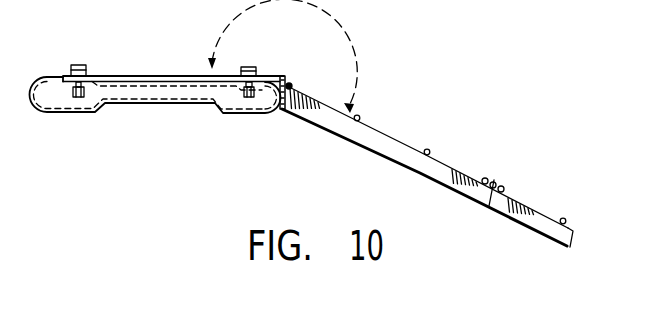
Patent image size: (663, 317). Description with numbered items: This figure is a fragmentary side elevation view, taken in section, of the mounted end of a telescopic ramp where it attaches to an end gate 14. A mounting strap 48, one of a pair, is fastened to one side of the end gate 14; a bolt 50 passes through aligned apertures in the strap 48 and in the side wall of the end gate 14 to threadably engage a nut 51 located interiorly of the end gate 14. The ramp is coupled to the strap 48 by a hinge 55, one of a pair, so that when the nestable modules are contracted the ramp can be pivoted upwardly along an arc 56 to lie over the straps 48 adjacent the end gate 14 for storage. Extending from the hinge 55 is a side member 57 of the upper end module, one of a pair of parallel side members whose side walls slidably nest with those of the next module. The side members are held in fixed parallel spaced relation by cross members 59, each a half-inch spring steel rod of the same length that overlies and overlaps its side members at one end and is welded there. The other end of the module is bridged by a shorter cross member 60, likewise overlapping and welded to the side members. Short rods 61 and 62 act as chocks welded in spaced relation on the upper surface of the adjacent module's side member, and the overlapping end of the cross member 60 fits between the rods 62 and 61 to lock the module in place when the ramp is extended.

The end gate 14 is at (78, 112).
The mounting strap 48 is at (142, 75).
The bolt 50 is at (247, 66).
The nut 51 is at (258, 88).
The hinge 55 is at (283, 77).
The arc 56 is at (344, 36).
The side member 57 is at (405, 163).
The cross member 59 is at (292, 86).
The cross member 60 is at (496, 183).
The rod 61 is at (504, 188).
The rod 62 is at (486, 178).